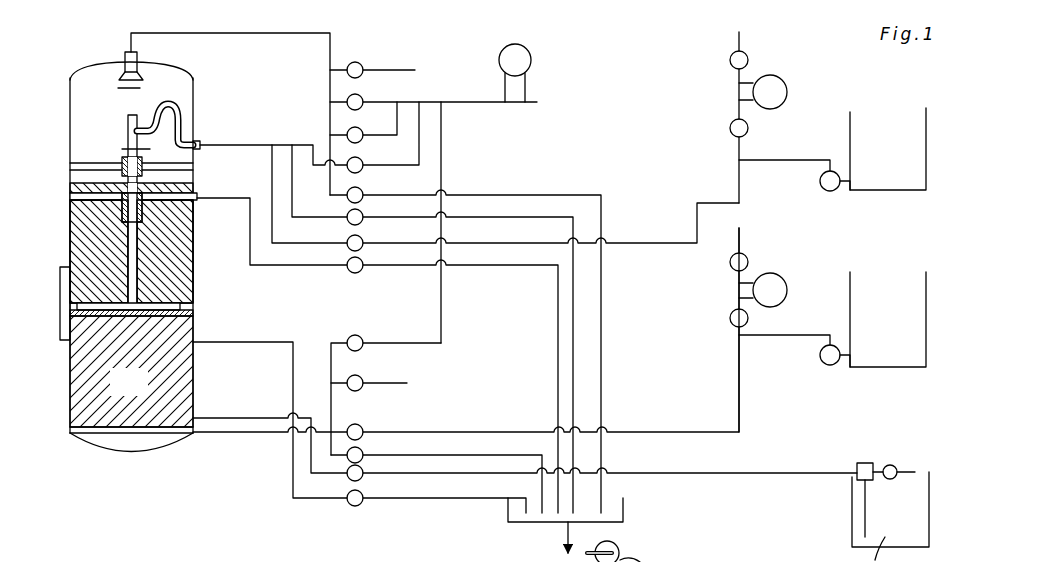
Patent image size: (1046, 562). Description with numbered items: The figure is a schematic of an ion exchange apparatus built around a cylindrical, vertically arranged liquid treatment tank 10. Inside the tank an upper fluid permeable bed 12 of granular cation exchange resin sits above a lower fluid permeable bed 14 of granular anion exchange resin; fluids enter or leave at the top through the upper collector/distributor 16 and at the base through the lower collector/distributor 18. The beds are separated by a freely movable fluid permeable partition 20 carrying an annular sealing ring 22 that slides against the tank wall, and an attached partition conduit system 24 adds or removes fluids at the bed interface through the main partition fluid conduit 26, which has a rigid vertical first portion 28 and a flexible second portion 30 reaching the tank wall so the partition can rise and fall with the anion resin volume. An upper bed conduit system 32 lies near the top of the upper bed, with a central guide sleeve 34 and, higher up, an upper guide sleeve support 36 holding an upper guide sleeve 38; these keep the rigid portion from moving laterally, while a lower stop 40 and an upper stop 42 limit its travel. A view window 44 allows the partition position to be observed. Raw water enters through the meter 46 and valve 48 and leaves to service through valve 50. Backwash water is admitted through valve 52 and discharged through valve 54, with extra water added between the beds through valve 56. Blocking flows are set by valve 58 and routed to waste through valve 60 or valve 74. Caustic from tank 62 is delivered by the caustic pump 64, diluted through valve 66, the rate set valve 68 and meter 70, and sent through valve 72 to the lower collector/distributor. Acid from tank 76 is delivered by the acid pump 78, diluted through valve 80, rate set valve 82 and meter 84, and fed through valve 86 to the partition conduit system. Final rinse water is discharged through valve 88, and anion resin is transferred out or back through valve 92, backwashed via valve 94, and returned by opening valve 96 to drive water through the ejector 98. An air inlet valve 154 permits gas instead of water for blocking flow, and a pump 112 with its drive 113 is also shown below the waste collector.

The liquid treatment tank 10 is at (70, 130).
The upper fluid permeable bed 12 is at (183, 250).
The lower fluid permeable bed 14 is at (140, 393).
The upper collector/distributor 16 is at (124, 70).
The lower collector/distributor 18 is at (150, 446).
The fluid permeable partition 20 is at (135, 317).
The annular sealing ring 22 is at (193, 305).
The partition conduit system 24 is at (149, 300).
The main partition fluid conduit 26 is at (126, 128).
The rigid first portion 28 is at (130, 268).
The flexible second portion 30 is at (174, 108).
The upper bed conduit system 32 is at (70, 200).
The guide sleeve 34 is at (142, 212).
The upper guide sleeve support 36 is at (193, 167).
The upper guide sleeve 38 is at (142, 160).
The lower stop 40 is at (122, 149).
The upper stop 42 is at (135, 91).
The view window 44 is at (60, 320).
The meter 46 is at (528, 70).
The valve 48 is at (364, 102).
The valve 50 is at (364, 380).
The valve 52 is at (364, 340).
The valve 54 is at (363, 195).
The valve 56 is at (364, 165).
The valve 58 is at (362, 132).
The valve 60 is at (362, 216).
The tank 62 is at (875, 367).
The caustic pump 64 is at (823, 368).
The valve 66 is at (730, 322).
The rate set valve 68 is at (730, 262).
The meter 70 is at (782, 290).
The valve 72 is at (364, 428).
The valve 74 is at (352, 274).
The tank 76 is at (882, 190).
The acid pump 78 is at (822, 190).
The valve 80 is at (730, 132).
The rate set valve 82 is at (730, 60).
The meter 84 is at (787, 98).
The valve 86 is at (364, 243).
The valve 88 is at (364, 454).
The valve 92 is at (352, 481).
The valve 94 is at (362, 506).
The valve 96 is at (893, 465).
The ejector 98 is at (856, 464).
The pump 112 is at (619, 549).
The motor 113 is at (630, 558).
The air inlet valve 154 is at (365, 66).